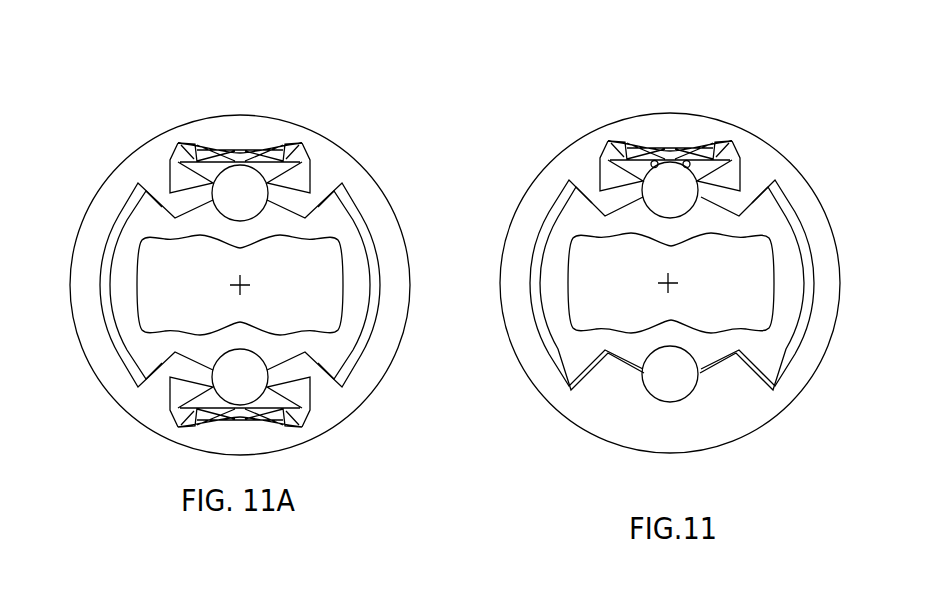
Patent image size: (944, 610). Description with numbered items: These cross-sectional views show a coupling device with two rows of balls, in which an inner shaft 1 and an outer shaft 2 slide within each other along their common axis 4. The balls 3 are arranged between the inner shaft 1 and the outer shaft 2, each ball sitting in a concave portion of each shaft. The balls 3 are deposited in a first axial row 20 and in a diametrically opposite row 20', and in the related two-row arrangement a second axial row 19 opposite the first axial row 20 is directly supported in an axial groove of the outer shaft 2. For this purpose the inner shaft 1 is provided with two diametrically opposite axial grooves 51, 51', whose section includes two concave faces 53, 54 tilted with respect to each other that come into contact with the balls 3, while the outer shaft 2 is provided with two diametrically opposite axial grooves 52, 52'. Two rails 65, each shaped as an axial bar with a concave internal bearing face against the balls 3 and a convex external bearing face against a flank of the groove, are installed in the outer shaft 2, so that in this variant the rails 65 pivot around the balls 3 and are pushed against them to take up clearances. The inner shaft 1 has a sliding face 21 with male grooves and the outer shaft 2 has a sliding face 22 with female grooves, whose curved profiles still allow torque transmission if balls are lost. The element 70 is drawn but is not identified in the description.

In FIG. 11A, the inner shaft 1 is at (136, 247).
In FIG. 11, the inner shaft 1 is at (558, 242).
In FIG. 11A, the outer shaft 2 is at (366, 191).
In FIG. 11, the outer shaft 2 is at (812, 217).
In FIG. 11, the balls 3 is at (684, 182).
In FIG. 11, the common axis 4 is at (670, 283).
In FIG. 11, the second axial row of balls 19 is at (663, 382).
In FIG. 11A, the first axial row of balls 20 is at (233, 132).
In FIG. 11, the first axial row of balls 20 is at (654, 147).
In FIG. 11A, the diametrically opposite row of balls 20' is at (312, 415).
In FIG. 11, the sliding face of the inner shaft 21 is at (802, 333).
In FIG. 11, the sliding face of the outer shaft 22 is at (812, 298).
In FIG. 11A, the axial groove of the inner shaft 51 is at (277, 242).
In FIG. 11, the axial groove of the inner shaft 51 is at (563, 247).
In FIG. 11A, the diametrically opposite axial groove of the inner shaft 51' is at (294, 366).
In FIG. 11A, the axial groove of the outer shaft 52 is at (240, 117).
In FIG. 11, the axial groove of the outer shaft 52 is at (670, 134).
In FIG. 11A, the diametrically opposite axial groove of the outer shaft 52' is at (186, 422).
In FIG. 11, the concave face 53 is at (582, 192).
In FIG. 11, the concave face 54 is at (762, 188).
In FIG. 11, the rail 65 is at (620, 172).
In FIG. 11, the bar 70 is at (656, 158).